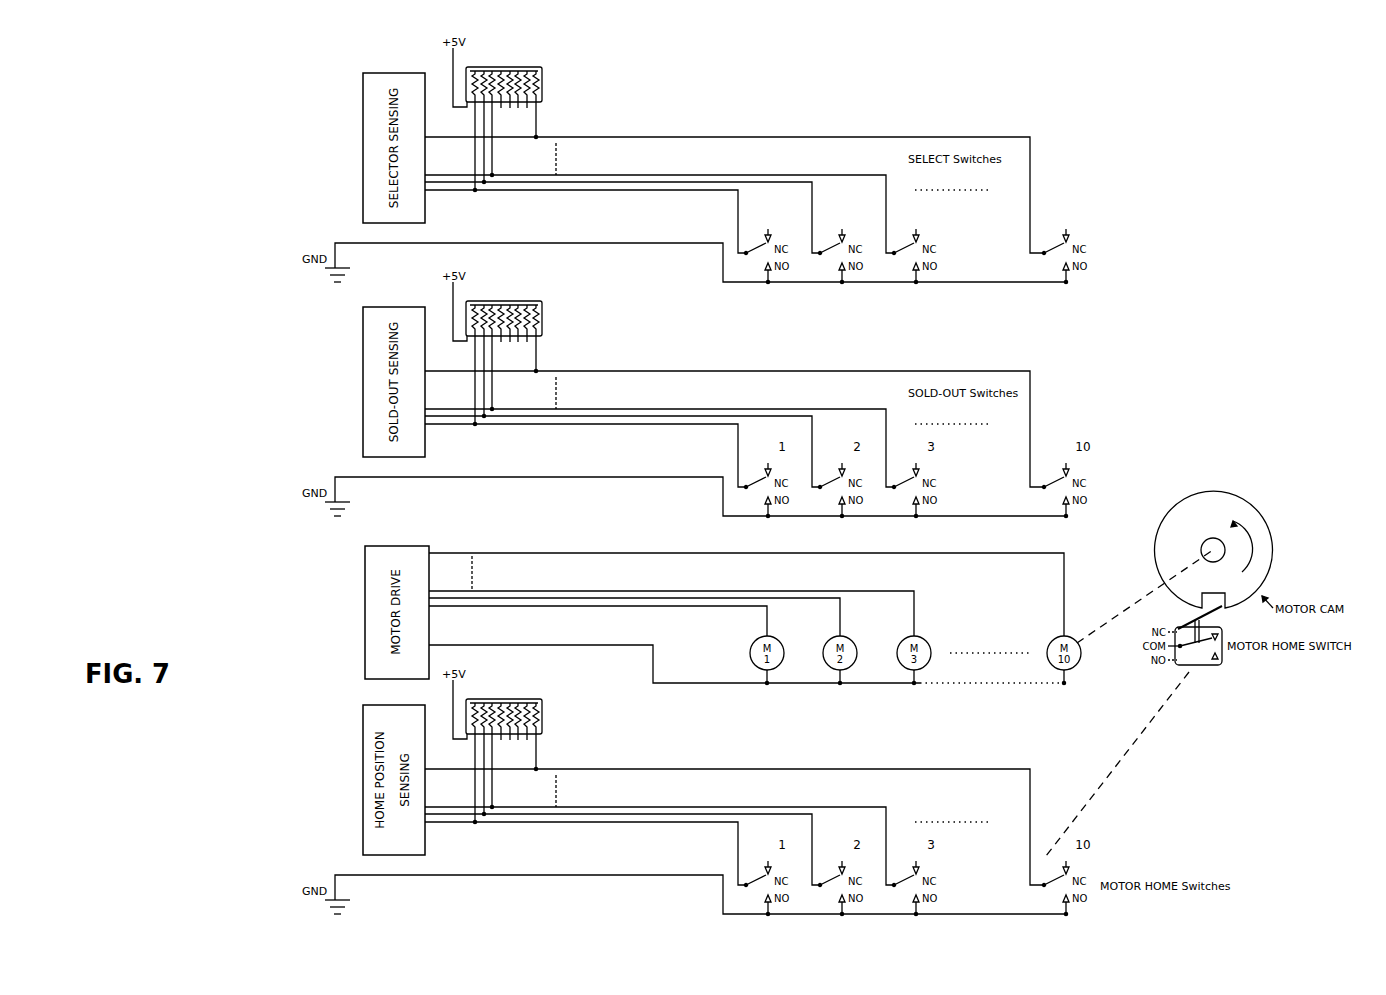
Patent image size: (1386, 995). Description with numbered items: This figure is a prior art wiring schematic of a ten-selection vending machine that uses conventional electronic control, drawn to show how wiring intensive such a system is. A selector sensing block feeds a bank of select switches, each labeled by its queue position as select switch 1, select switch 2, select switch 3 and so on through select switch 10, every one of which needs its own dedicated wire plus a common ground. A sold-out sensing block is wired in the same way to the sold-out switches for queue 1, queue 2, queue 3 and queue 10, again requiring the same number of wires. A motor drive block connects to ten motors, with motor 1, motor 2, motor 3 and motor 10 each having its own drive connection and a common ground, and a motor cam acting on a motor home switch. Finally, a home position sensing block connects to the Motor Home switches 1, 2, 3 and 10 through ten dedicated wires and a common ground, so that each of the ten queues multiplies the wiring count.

The switch 1 is at (766, 245).
The switch 2 is at (840, 245).
The switch 3 is at (914, 245).
The switch 10 is at (1066, 245).